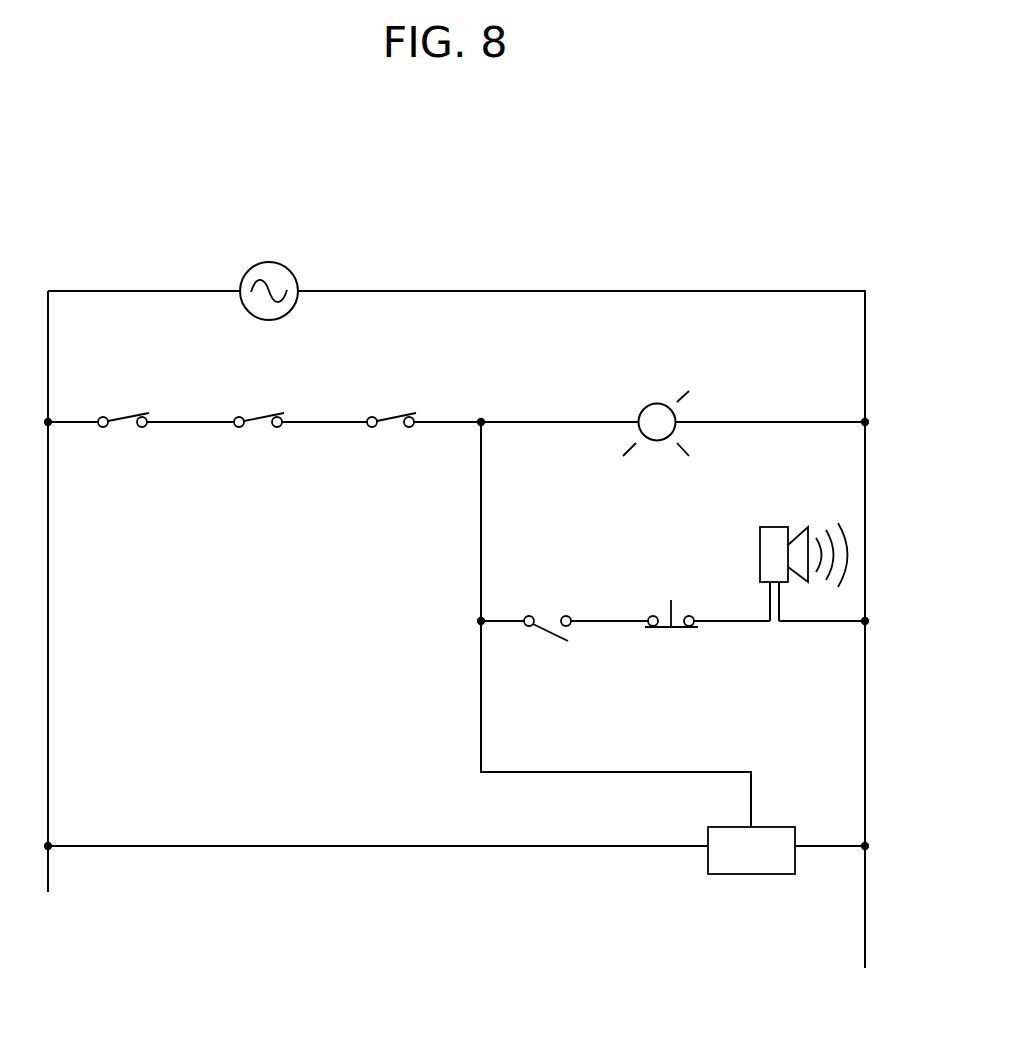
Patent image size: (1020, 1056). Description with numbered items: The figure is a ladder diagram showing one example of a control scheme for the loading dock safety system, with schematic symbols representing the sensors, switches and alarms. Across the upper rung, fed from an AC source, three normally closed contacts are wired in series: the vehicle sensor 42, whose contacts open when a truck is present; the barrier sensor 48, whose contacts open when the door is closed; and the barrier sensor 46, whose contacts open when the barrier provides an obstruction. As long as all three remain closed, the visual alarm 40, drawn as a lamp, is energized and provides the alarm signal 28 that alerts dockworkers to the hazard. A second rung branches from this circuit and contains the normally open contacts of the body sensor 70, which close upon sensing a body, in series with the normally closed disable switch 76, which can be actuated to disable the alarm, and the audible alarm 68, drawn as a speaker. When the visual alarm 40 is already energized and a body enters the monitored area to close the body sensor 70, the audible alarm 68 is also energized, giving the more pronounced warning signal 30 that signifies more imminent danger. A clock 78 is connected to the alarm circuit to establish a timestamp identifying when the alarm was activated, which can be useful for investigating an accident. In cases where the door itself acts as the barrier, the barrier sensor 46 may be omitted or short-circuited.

The vehicle sensor 42 is at (120, 417).
The barrier sensor 48 is at (258, 417).
The barrier sensor 46 is at (392, 417).
The visual alarm 40 is at (658, 403).
The alarm signal 28 is at (637, 402).
The audible alarm 68 is at (760, 558).
The warning signal 30 is at (846, 549).
The body sensor 70 is at (548, 616).
The disable switch 76 is at (668, 610).
The clock 78 is at (737, 875).